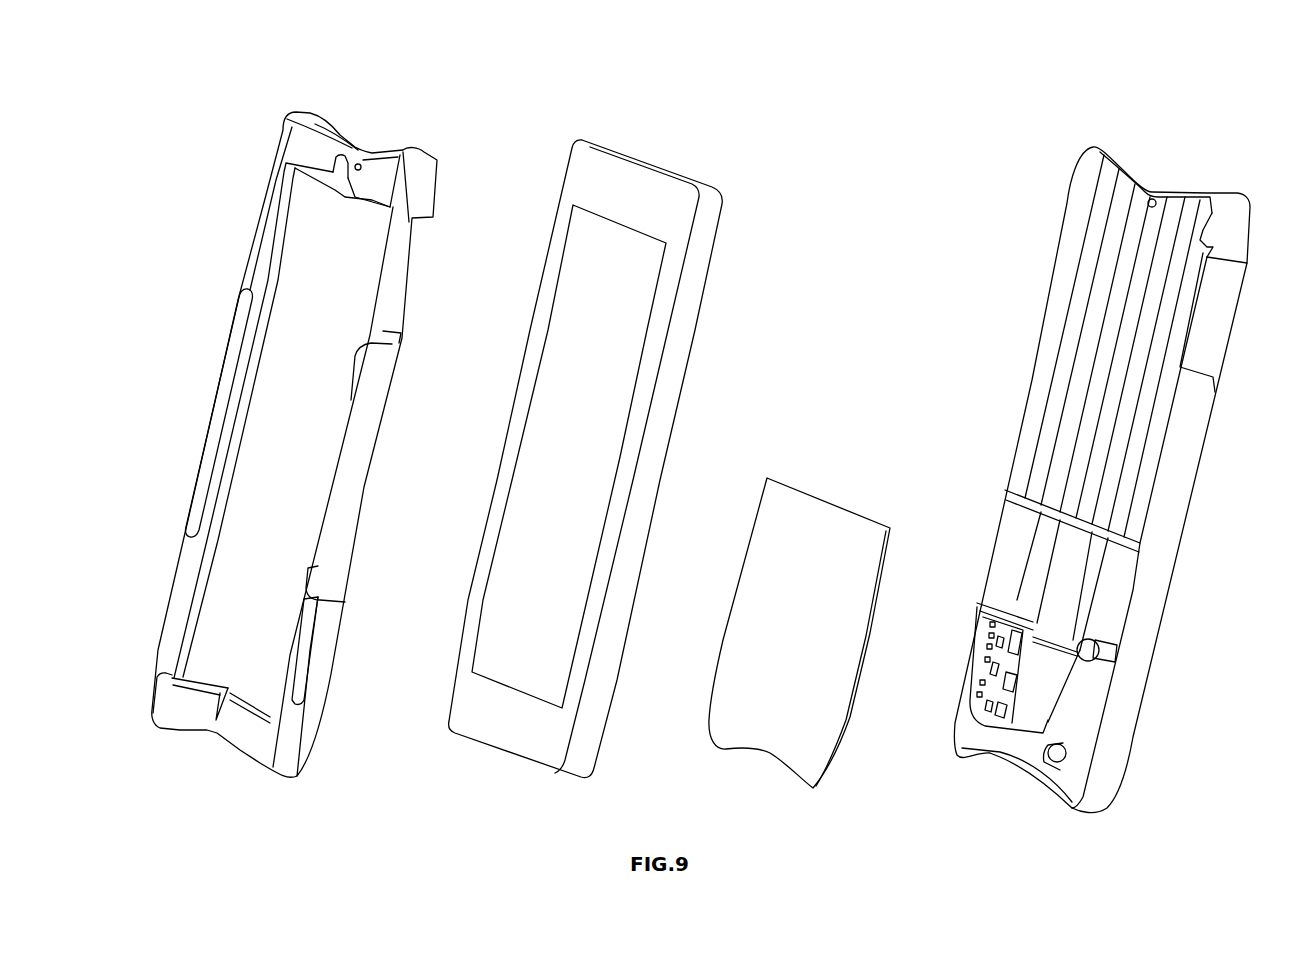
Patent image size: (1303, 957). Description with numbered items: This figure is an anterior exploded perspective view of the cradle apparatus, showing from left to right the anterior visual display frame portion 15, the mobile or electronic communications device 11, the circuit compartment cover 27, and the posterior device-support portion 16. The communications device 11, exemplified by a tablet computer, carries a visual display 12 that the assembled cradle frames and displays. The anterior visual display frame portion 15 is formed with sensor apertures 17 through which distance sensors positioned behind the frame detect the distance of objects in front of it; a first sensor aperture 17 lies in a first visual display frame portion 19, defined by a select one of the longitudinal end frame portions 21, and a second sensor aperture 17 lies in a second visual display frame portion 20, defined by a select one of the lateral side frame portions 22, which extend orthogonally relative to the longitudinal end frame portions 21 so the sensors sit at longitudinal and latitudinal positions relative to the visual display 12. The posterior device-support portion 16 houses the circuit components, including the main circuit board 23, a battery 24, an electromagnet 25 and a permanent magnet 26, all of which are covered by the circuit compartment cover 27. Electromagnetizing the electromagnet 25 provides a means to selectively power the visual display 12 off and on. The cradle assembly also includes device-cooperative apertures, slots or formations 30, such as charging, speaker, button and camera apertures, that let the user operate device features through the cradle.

The mobile or electronic communications device 11 is at (703, 253).
The visual display 12 is at (597, 235).
The anterior visual display frame portion 15 is at (262, 225).
The posterior device-support portion 16 is at (1193, 192).
The sensor aperture 17 is at (361, 167).
The first visual display frame portion 19 is at (426, 157).
The second visual display frame portion 20 is at (317, 544).
The longitudinal end frame portion 21 is at (325, 116).
The lateral side frame portion 22 is at (184, 573).
The main circuit board 23 is at (983, 666).
The battery 24 is at (1060, 583).
The electromagnet 25 is at (1094, 640).
The permanent magnet 26 is at (1049, 755).
The circuit compartment cover 27 is at (768, 705).
The device-cooperative apertures, slots or formations 30 is at (1150, 203).